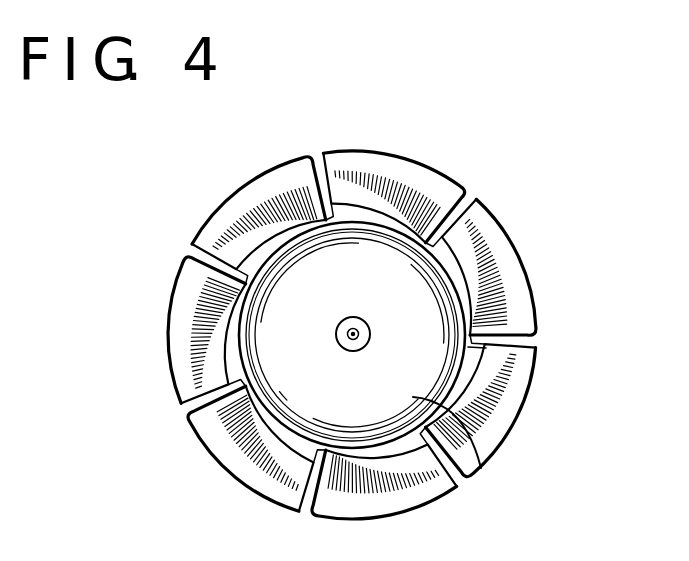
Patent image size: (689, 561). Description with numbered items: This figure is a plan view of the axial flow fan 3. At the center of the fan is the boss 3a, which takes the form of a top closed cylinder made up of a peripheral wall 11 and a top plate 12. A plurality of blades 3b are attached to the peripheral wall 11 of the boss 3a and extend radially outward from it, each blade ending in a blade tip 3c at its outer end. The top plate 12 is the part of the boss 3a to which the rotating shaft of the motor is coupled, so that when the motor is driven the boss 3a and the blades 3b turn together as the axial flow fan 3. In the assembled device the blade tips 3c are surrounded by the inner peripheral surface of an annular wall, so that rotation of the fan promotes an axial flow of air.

The axial flow fan 3 is at (522, 204).
The boss 3a is at (288, 402).
The blades 3b is at (197, 298).
The blade tips 3c is at (226, 199).
The peripheral wall 11 is at (472, 356).
The top plate 12 is at (481, 469).